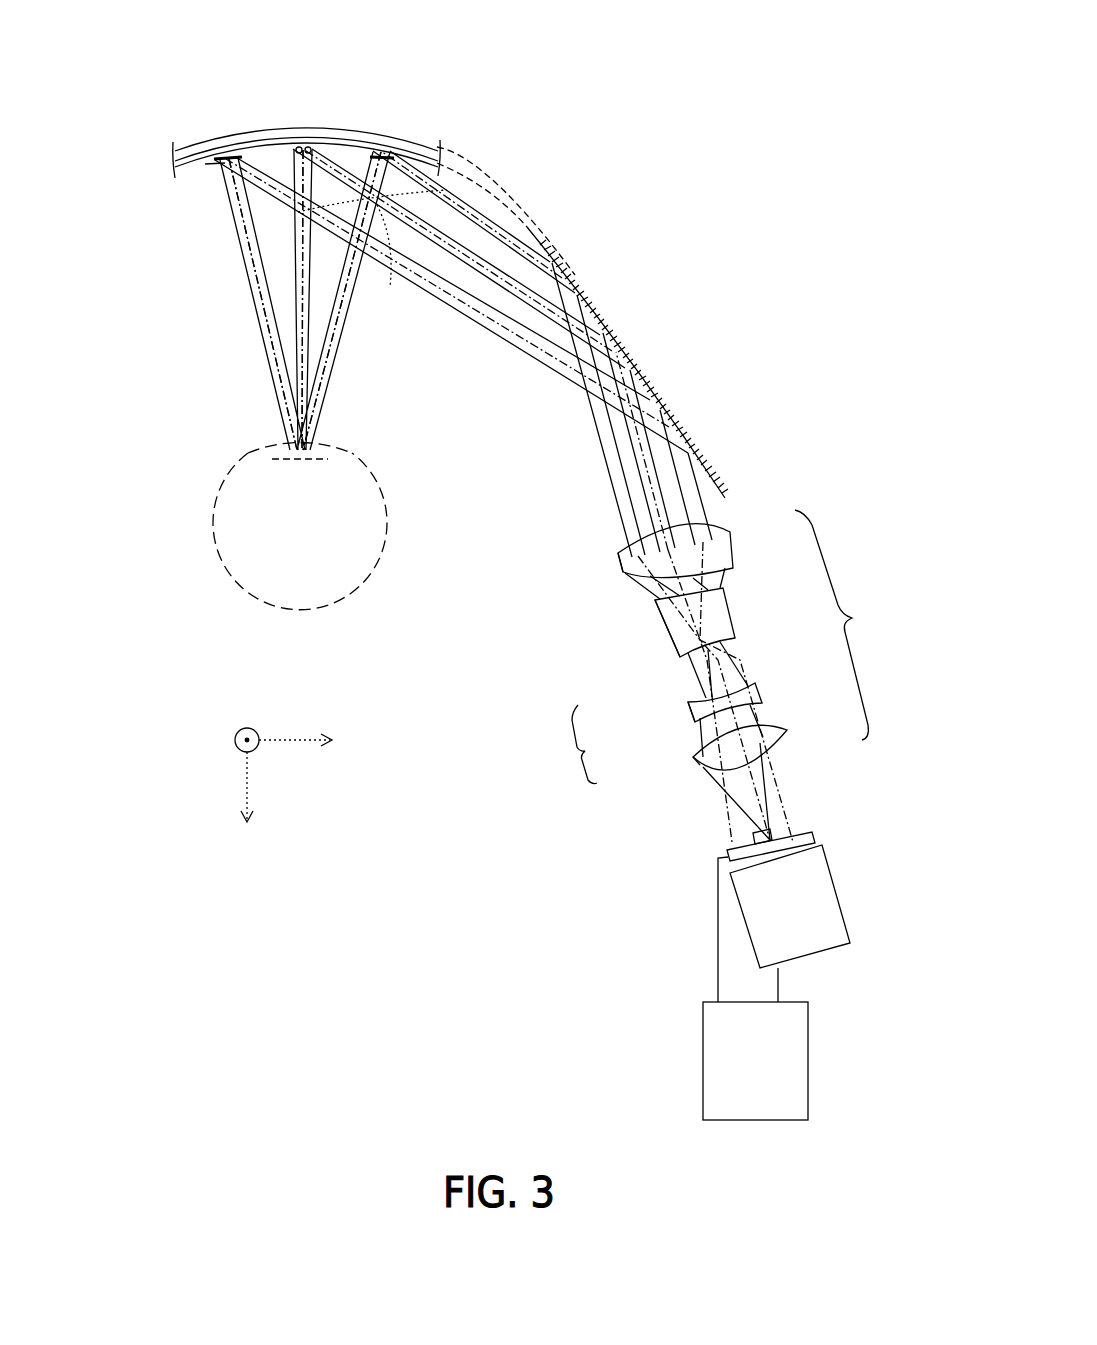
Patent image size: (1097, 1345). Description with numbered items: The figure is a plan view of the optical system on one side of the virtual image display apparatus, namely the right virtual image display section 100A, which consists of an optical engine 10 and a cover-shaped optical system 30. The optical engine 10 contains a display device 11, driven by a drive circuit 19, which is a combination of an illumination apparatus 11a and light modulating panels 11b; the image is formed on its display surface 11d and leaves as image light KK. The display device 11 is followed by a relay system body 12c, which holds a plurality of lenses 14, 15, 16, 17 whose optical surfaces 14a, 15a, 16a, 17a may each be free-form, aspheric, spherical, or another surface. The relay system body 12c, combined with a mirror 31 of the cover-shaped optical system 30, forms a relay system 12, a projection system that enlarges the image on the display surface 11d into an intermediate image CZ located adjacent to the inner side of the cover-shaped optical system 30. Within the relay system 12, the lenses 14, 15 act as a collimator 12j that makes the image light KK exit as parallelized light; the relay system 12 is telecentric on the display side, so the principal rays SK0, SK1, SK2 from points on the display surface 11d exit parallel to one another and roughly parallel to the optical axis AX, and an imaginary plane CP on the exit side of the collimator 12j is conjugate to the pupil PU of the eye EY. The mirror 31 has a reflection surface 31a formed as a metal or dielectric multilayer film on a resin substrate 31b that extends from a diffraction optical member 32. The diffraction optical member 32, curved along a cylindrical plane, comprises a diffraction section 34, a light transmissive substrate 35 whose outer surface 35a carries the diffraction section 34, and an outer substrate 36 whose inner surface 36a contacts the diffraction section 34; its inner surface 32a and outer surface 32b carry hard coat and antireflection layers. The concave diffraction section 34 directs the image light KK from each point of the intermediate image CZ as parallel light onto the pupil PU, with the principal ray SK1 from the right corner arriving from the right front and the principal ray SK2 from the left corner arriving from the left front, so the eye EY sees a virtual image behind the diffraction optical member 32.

The right virtual image display section 100A is at (673, 85).
The optical engine 10 is at (703, 744).
The display device 11 is at (755, 907).
The illumination apparatus 11a is at (818, 943).
The light modulating panels 11b is at (813, 833).
The display surface 11d is at (772, 834).
The relay system 12 is at (712, 604).
The relay system body 12c is at (846, 625).
The collimator 12j is at (562, 744).
The lens 14 is at (787, 738).
The optical surface 14a is at (717, 773).
The lens 15 is at (753, 692).
The optical surface 15a is at (707, 732).
The lens 16 is at (728, 615).
The optical surface 16a is at (680, 657).
The lens 17 is at (725, 550).
The optical surface 17a is at (643, 582).
The drive circuit 19 is at (771, 1073).
The cover-shaped optical system 30 is at (471, 331).
The mirror 31 is at (627, 352).
The reflection surface 31a is at (537, 250).
The resin substrate 31b is at (563, 256).
The diffraction optical member 32 is at (276, 143).
The inner surface 32a is at (200, 176).
The outer surface 32b is at (200, 146).
The diffraction section 34 is at (316, 146).
The light transmissive substrate 35 is at (270, 154).
The outer surface 35a is at (403, 153).
The outer substrate 36 is at (286, 146).
The inner surface 36a is at (213, 166).
The image light KK is at (320, 357).
The intermediate image CZ is at (378, 208).
The optical axis AX is at (303, 322).
The principal ray SK0 is at (745, 800).
The principal ray SK1 is at (323, 378).
The principal ray SK2 is at (277, 380).
The pupil PU is at (316, 452).
The eye EY is at (387, 498).
The imaginary plane CP is at (693, 665).